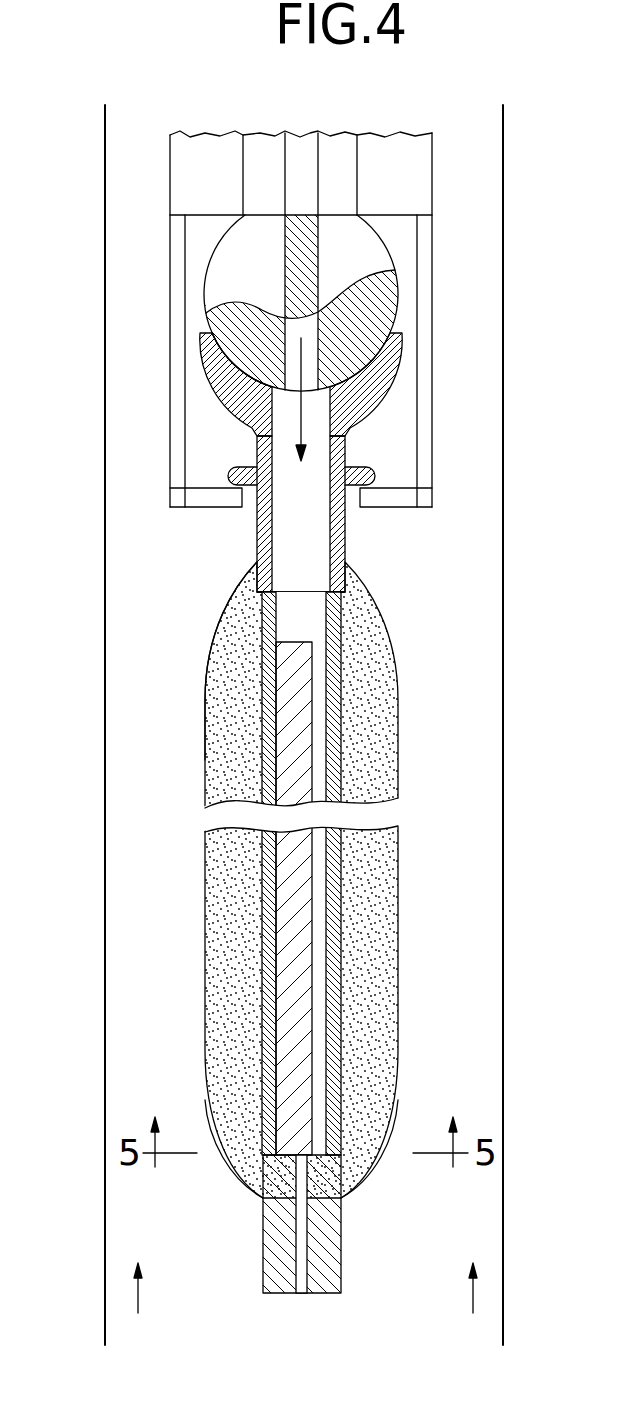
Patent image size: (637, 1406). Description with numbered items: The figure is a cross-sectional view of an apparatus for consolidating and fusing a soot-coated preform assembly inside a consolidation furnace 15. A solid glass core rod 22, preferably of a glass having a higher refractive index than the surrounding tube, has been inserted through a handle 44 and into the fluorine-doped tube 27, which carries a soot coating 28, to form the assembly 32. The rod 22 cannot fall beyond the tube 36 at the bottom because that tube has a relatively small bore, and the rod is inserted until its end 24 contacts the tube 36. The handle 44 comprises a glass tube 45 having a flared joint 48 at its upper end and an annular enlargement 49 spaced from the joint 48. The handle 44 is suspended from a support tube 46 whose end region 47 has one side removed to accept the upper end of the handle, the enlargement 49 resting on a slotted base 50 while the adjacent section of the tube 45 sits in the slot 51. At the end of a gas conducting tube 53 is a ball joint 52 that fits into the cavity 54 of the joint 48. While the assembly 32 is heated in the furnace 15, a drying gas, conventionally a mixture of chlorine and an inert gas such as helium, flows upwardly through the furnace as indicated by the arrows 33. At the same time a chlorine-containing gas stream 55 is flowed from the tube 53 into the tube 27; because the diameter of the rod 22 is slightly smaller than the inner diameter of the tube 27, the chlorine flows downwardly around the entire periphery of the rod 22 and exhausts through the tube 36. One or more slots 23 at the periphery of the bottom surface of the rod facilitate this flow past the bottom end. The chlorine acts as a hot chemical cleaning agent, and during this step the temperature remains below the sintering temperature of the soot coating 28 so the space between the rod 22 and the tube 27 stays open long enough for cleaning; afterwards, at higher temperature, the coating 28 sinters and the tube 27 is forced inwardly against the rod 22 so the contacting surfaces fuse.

The consolidation furnace 15 is at (104, 917).
The solid glass core rod 22 is at (297, 775).
The slots 23 is at (234, 1165).
The end of rod 24 is at (297, 1158).
The fluorine-doped tube 27 is at (330, 915).
The soot coating 28 is at (365, 727).
The assembly 32 is at (206, 689).
The drying gas flow arrows 33 is at (138, 1300).
The tube 36 is at (342, 1242).
The handle 44 is at (346, 588).
The glass tube 45 is at (257, 548).
The support tube 46 is at (418, 189).
The end region 47 is at (430, 307).
The flared joint 48 is at (372, 385).
The annular enlargement 49 is at (375, 468).
The slotted base 50 is at (205, 488).
The slot 51 is at (360, 497).
The ball joint 52 is at (383, 245).
The gas conducting tube 53 is at (242, 216).
The cavity 54 is at (243, 355).
The chlorine-containing gas stream 55 is at (317, 427).